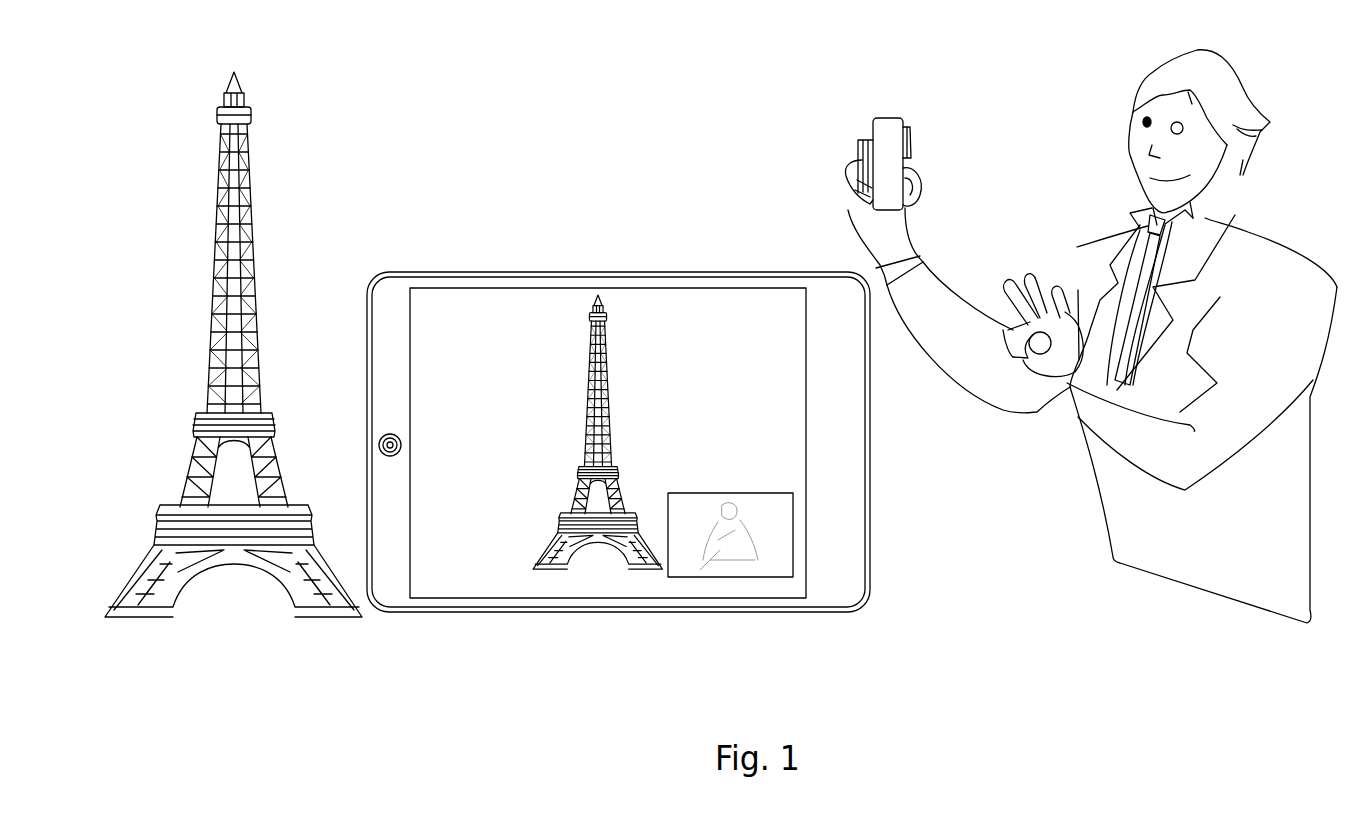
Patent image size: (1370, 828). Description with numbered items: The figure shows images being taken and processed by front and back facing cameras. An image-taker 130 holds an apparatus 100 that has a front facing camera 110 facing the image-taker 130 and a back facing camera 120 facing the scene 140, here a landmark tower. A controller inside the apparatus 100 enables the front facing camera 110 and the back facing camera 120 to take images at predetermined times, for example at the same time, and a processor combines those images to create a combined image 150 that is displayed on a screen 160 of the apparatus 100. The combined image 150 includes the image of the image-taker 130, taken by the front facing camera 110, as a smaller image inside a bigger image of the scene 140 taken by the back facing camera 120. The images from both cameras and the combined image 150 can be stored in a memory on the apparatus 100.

The apparatus 100 is at (889, 116).
The front facing camera 110 is at (380, 440).
The back facing camera 120 is at (855, 140).
The image-taker 130 is at (1249, 232).
The scene 140 is at (257, 228).
The combined image 150 is at (772, 422).
The screen 160 is at (704, 286).